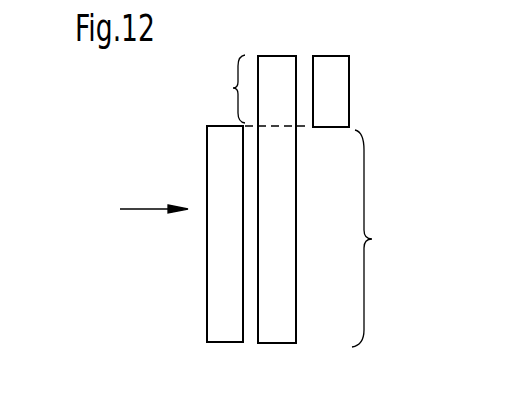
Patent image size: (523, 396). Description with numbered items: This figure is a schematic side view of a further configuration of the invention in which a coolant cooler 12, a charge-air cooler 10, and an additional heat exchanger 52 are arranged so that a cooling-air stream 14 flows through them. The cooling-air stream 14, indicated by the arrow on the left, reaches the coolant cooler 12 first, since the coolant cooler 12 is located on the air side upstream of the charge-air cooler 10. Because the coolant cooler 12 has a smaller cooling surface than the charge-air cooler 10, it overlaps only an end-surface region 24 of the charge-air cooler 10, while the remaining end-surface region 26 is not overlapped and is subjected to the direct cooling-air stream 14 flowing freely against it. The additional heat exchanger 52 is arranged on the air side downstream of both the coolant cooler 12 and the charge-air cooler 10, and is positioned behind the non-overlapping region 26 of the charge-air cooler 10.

The charge-air cooler 10 is at (285, 287).
The coolant cooler 12 is at (213, 173).
The cooling-air stream 14 is at (138, 209).
The end-surface region 24 is at (375, 238).
The end-surface region 26 is at (222, 89).
The additional heat exchanger 52 is at (343, 93).